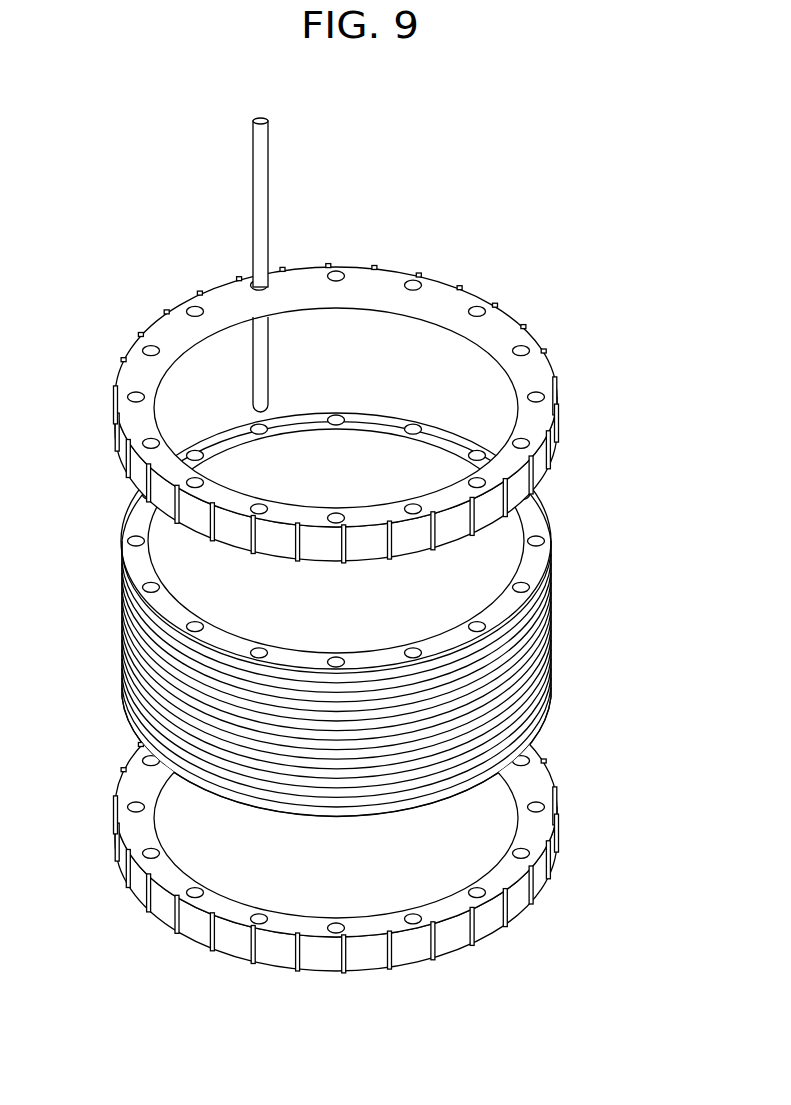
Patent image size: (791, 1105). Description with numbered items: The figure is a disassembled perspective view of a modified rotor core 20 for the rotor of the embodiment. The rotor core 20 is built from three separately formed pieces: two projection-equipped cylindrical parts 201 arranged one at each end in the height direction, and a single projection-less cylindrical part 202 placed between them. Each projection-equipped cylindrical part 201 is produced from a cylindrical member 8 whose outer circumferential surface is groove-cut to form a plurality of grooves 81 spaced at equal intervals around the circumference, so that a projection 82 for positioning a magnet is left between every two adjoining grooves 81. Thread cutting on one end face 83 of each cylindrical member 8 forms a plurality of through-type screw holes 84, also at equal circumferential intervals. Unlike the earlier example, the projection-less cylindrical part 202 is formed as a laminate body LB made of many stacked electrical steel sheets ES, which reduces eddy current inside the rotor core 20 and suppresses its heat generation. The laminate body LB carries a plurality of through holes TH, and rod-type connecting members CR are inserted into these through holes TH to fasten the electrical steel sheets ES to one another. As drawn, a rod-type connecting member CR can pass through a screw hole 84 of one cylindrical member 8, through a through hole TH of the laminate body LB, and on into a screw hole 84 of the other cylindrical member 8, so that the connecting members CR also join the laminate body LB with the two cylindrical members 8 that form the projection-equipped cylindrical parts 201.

The rotor core 20 is at (96, 228).
The projection-equipped cylindrical part 201 is at (397, 609).
The cylindrical member 8 is at (397, 609).
The projection-less cylindrical part 202 is at (370, 614).
The laminate body LB is at (370, 614).
The groove 81 is at (517, 895).
The projection 82 is at (505, 910).
The end face 83 is at (220, 905).
The through-type screw hole 84 is at (262, 922).
The through hole TH is at (412, 652).
The electrical steel sheet ES is at (122, 645).
The rod-type connecting member CR is at (265, 160).